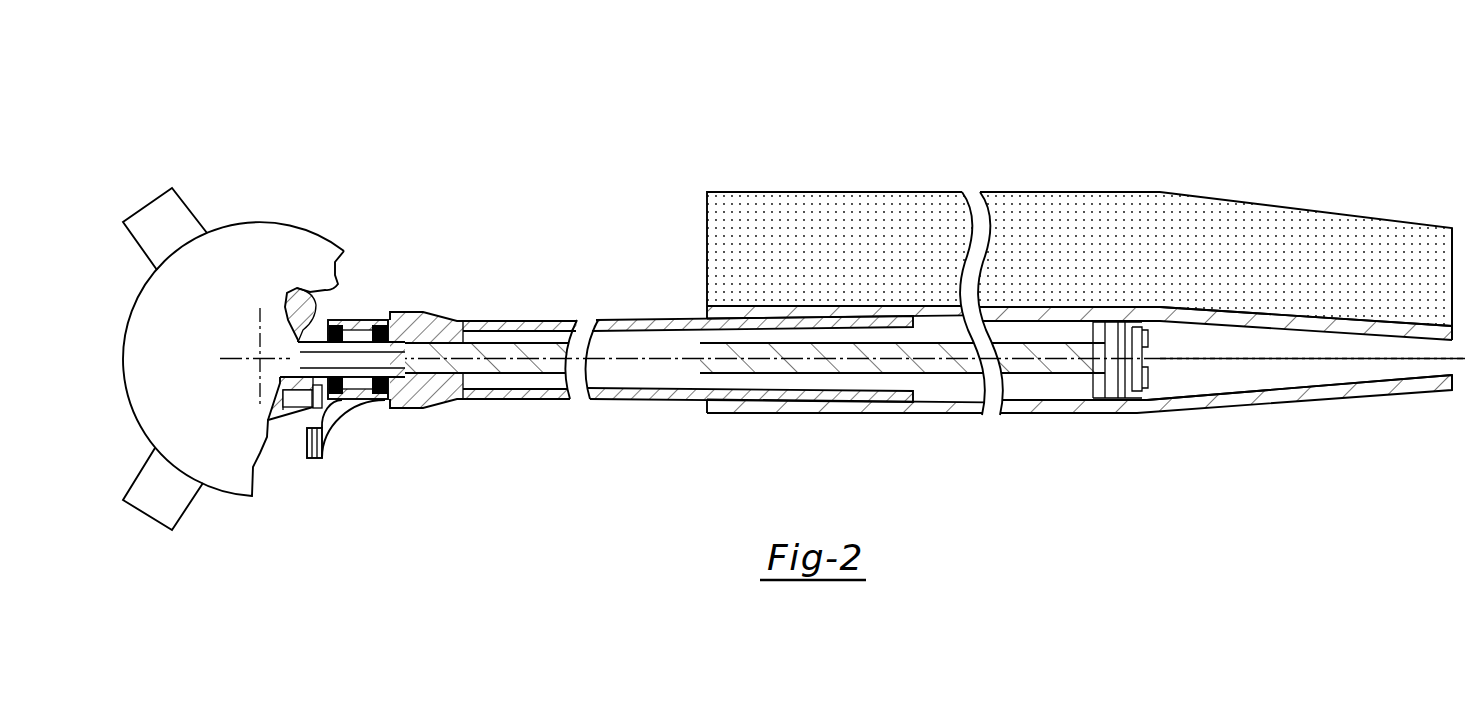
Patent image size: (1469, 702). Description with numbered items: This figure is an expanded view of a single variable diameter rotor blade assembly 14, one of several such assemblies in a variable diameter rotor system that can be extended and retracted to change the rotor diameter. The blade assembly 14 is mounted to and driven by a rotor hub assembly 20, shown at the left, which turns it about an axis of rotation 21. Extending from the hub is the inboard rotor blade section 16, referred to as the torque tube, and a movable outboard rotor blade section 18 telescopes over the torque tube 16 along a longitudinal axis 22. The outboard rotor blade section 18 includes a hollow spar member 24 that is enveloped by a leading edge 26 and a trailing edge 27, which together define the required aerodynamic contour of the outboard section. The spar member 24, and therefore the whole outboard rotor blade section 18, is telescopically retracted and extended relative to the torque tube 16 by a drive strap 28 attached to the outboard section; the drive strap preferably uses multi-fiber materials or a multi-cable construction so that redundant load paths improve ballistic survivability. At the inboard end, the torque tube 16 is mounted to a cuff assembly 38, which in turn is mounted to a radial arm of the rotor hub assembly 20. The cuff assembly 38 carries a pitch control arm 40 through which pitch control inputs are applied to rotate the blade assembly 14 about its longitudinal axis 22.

The variable diameter rotor blade assembly 14 is at (602, 233).
The inboard rotor blade section 16 is at (482, 313).
The outboard rotor blade section 18 is at (1097, 167).
The rotor hub assembly 20 is at (288, 234).
The axis of rotation 21 is at (258, 360).
The longitudinal axis 22 is at (1380, 360).
The hollow spar member 24 is at (1280, 382).
The leading edge 26 is at (1030, 413).
The trailing edge 27 is at (845, 196).
The drive strap 28 is at (544, 365).
The cuff assembly 38 is at (337, 328).
The pitch control arm 40 is at (353, 433).